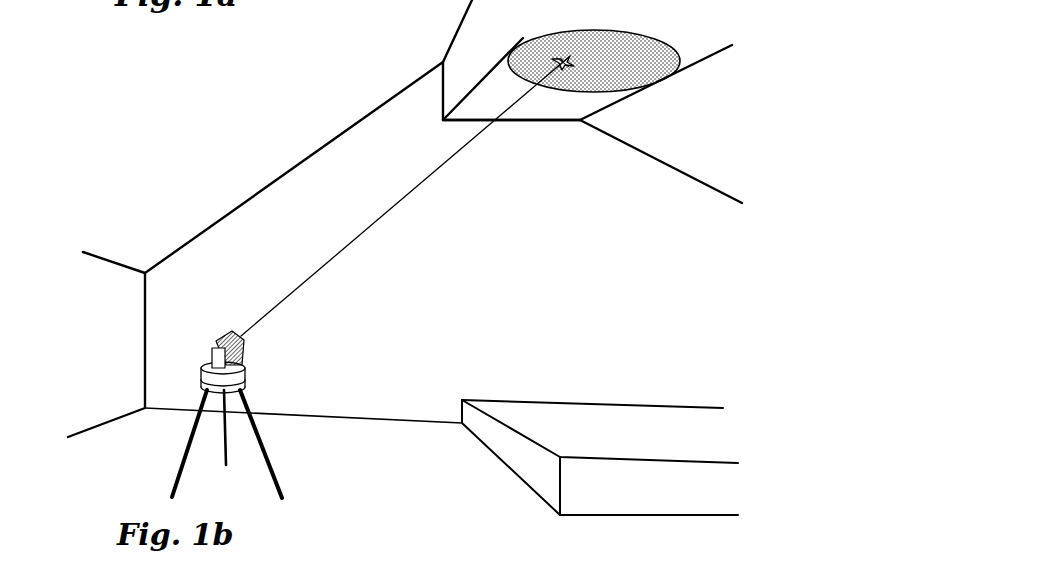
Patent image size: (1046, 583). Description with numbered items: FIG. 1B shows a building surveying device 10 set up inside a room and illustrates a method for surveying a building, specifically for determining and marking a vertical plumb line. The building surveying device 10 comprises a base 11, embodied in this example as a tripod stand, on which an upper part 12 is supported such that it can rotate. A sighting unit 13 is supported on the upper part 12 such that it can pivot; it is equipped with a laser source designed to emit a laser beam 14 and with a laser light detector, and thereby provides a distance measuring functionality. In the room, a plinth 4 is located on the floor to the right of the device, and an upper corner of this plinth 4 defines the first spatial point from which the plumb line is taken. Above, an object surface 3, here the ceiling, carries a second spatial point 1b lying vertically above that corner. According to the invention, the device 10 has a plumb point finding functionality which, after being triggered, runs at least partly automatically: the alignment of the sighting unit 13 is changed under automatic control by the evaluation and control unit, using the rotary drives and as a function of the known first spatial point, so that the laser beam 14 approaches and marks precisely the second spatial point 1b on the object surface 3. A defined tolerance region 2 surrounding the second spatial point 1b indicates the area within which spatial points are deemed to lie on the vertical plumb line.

The second spatial point 1b is at (568, 55).
The tolerance region 2 is at (610, 68).
The object surface 3 is at (537, 110).
The plinth 4 is at (585, 486).
The building surveying device 10 is at (194, 394).
The base 11 is at (203, 385).
The upper part 12 is at (192, 352).
The sighting unit 13 is at (240, 348).
The laser beam 14 is at (335, 258).